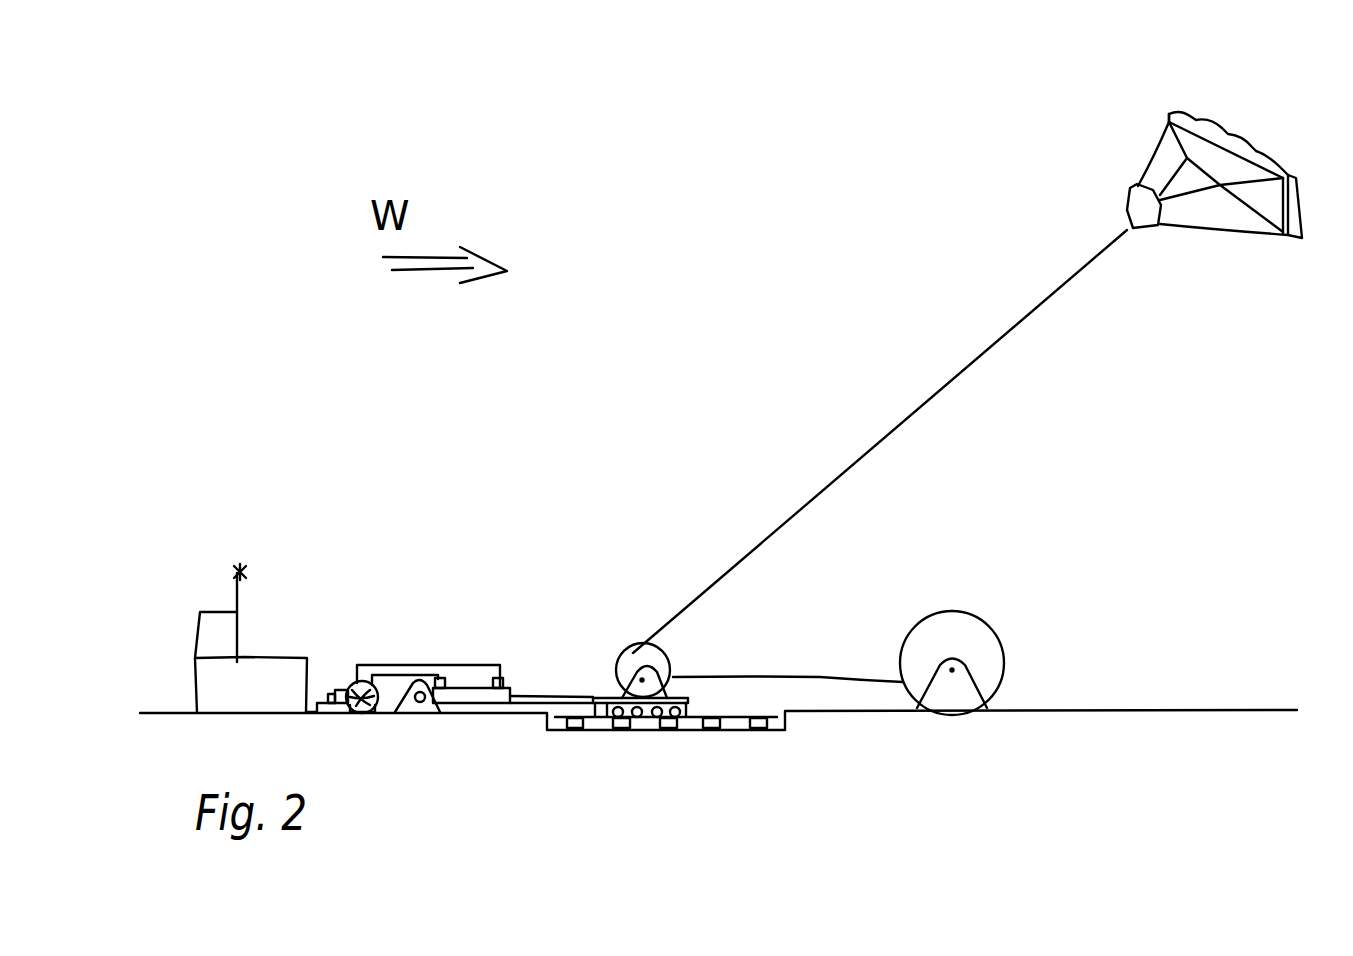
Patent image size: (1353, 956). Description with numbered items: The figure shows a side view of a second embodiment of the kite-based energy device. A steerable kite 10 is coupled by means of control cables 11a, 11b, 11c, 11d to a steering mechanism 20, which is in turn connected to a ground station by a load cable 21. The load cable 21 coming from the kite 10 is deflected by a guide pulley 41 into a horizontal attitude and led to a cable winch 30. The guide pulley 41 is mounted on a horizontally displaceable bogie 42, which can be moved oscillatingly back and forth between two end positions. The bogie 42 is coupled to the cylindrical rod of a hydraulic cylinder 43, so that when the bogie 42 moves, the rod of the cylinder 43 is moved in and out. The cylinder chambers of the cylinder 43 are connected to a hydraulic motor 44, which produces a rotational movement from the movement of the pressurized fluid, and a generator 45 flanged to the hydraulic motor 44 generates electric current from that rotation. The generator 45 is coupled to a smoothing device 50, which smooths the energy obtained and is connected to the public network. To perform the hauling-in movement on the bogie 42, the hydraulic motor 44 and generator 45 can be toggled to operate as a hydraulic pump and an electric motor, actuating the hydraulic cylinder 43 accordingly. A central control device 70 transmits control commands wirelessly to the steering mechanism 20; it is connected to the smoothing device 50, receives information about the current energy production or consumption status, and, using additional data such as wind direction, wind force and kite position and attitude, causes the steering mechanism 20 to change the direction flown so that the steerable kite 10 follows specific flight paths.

The steerable kite 10 is at (1195, 190).
The control cable 11a is at (1207, 230).
The control cable 11b is at (1220, 185).
The control cable 11c is at (1165, 148).
The control cable 11d is at (1148, 173).
The steering mechanism 20 is at (1140, 217).
The load cable 21 is at (847, 468).
The cable winch 30 is at (977, 643).
The guide pulley 41 is at (642, 660).
The bogie 42 is at (652, 698).
The hydraulic cylinder 43 is at (473, 700).
The hydraulic motor 44 is at (351, 680).
The generator 45 is at (341, 696).
The smoothing device 50 is at (273, 683).
The central control device 70 is at (220, 627).